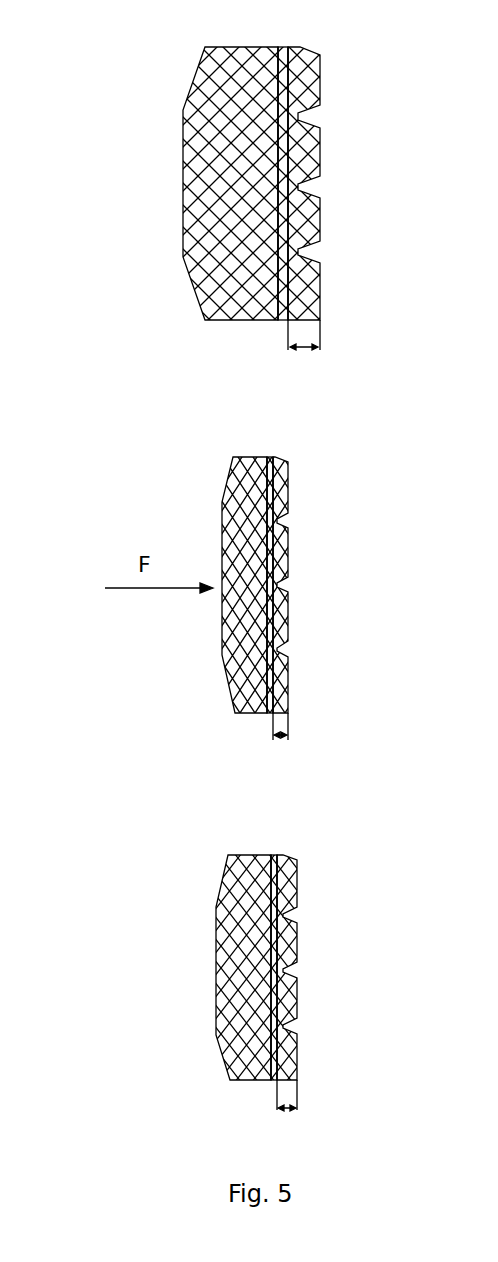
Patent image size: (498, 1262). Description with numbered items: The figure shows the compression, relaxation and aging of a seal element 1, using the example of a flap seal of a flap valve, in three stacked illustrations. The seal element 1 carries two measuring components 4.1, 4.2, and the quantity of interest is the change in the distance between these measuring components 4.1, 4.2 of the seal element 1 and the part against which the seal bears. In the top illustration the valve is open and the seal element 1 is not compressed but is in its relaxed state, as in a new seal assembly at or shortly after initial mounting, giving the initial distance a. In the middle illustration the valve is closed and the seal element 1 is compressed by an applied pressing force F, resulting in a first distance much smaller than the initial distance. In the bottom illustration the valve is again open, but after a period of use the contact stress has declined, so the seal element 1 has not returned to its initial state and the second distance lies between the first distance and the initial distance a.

The seal element 1 is at (263, 53).
The measuring component 4.1 is at (287, 303).
The measuring component 4.2 is at (320, 328).